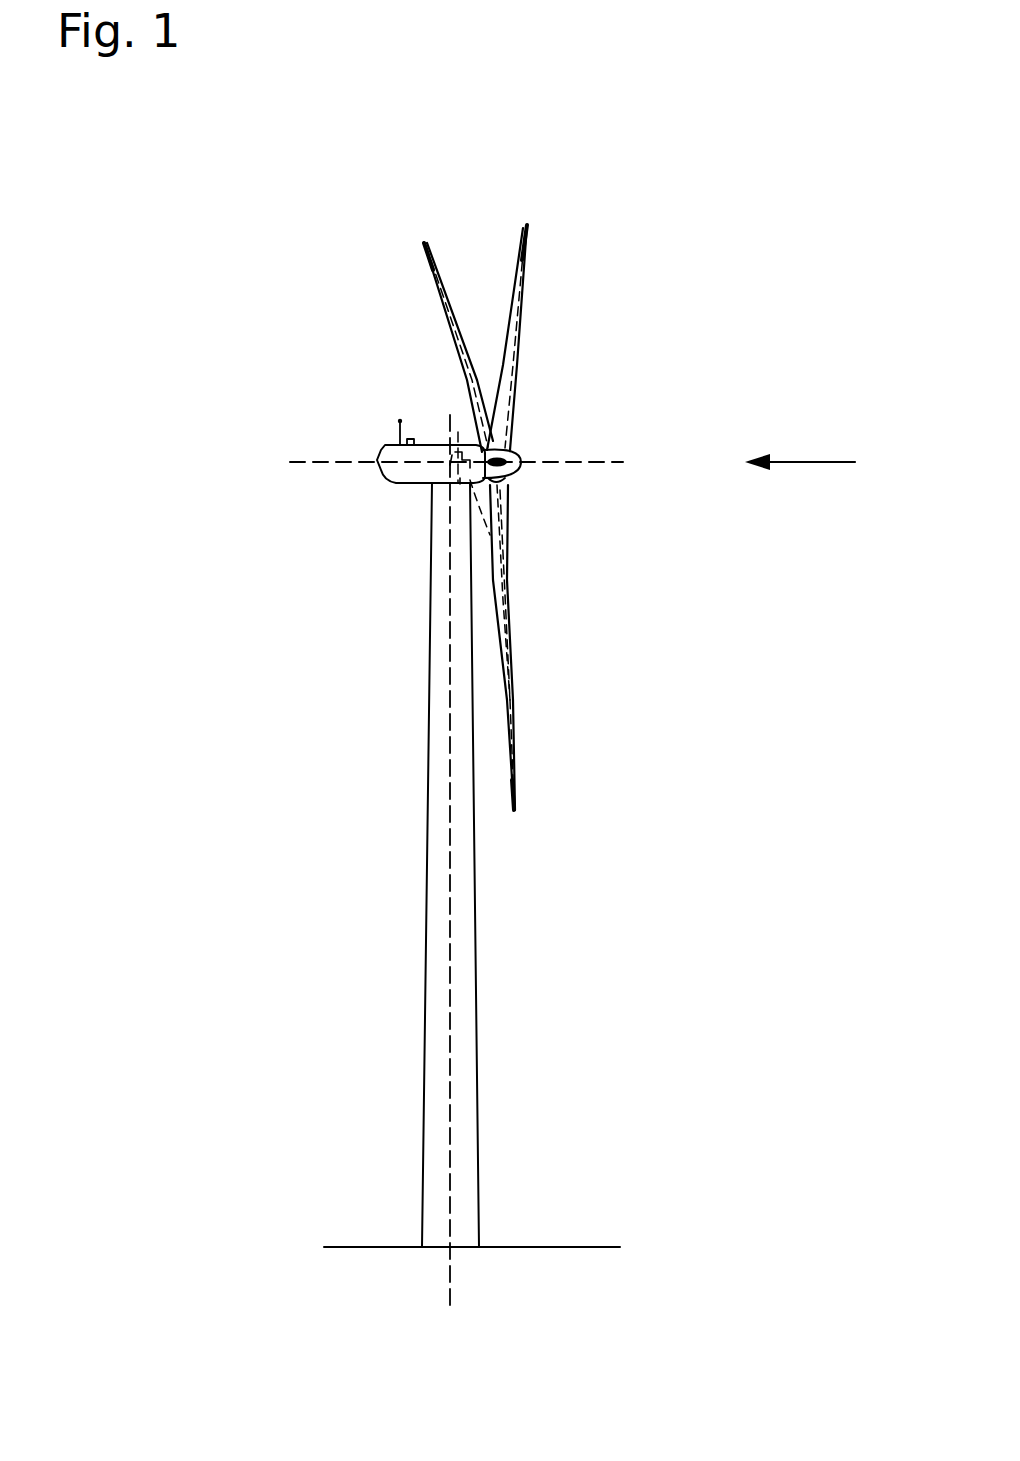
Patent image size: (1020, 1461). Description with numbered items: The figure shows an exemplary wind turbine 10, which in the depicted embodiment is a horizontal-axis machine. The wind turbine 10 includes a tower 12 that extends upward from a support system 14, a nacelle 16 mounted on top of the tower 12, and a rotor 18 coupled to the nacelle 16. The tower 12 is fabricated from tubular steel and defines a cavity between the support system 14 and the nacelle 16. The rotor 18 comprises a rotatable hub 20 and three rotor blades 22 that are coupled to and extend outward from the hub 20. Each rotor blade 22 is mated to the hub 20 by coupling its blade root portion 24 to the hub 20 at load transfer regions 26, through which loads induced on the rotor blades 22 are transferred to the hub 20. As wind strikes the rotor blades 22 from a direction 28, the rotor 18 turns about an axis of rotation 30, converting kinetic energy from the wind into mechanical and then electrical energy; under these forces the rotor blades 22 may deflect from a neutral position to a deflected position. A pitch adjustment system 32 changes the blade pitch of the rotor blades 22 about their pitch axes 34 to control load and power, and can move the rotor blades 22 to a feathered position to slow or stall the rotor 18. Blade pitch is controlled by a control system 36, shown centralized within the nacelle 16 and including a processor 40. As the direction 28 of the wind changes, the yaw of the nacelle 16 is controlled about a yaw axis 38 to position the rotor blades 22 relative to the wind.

The wind turbine 10 is at (208, 247).
The tower 12 is at (430, 1021).
The support system 14 is at (381, 1247).
The nacelle 16 is at (400, 487).
The rotor 18 is at (538, 362).
The rotatable hub 20 is at (518, 459).
The rotor blade 22 is at (447, 312).
The blade root portion 24 is at (510, 566).
The load transfer regions 26 is at (501, 481).
The direction 28 is at (820, 462).
The axis of rotation 30 is at (612, 464).
The pitch adjustment system 32 is at (492, 502).
The pitch axes 34 is at (421, 250).
The control system 36 is at (455, 490).
The yaw axis 38 is at (452, 906).
The processor 40 is at (458, 432).